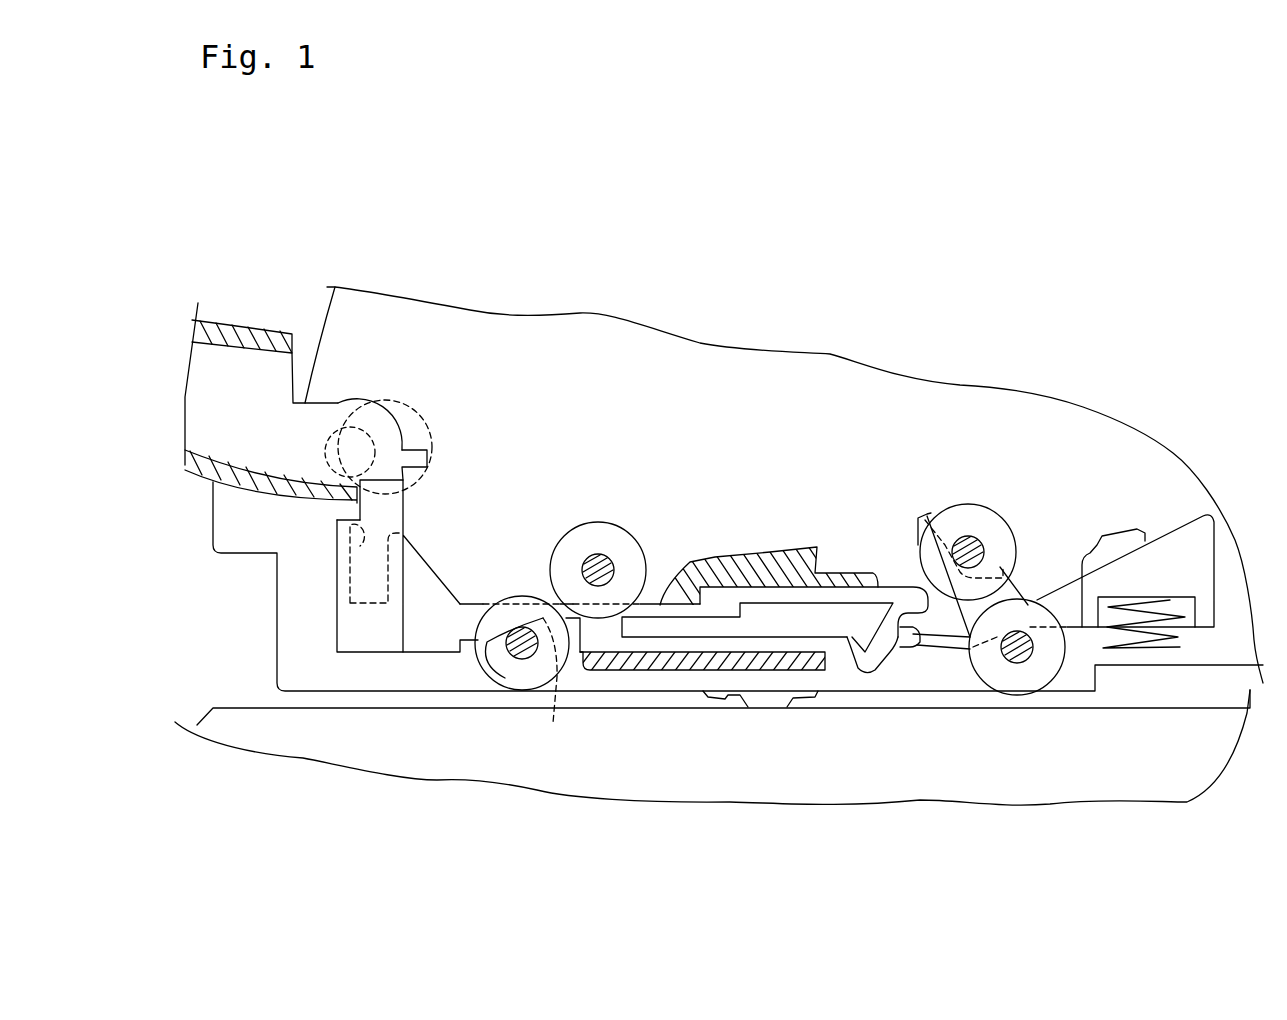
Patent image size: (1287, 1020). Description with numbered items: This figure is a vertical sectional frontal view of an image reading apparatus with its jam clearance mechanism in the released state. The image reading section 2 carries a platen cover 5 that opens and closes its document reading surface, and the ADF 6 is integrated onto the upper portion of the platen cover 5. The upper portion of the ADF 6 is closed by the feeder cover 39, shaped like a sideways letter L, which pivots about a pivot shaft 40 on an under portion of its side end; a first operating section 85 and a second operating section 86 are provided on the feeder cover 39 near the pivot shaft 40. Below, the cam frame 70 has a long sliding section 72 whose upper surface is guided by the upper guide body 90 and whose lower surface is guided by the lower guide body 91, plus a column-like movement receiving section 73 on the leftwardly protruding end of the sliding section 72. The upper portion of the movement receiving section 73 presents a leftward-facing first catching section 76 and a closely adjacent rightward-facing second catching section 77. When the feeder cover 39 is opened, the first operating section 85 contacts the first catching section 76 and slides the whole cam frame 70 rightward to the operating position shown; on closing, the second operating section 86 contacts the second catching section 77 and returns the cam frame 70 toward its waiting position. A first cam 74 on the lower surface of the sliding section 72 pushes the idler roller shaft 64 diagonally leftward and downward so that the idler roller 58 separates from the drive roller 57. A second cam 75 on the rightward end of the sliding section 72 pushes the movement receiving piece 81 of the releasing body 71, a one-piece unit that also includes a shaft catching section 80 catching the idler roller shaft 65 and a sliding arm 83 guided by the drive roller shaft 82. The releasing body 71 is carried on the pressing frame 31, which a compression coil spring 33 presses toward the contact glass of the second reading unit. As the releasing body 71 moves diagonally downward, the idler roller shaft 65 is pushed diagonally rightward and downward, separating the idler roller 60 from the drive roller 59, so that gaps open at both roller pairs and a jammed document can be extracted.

The ADF 6 is at (327, 330).
The feeder cover 39 is at (197, 475).
The pivot shaft 40 is at (346, 396).
The second operating section 86 is at (414, 446).
The first operating section 85 is at (370, 473).
The movement receiving section 73 is at (398, 505).
The first catching section 76 is at (355, 508).
The second catching section 77 is at (352, 558).
The platen cover 5 is at (277, 640).
The image reading section 2 is at (201, 722).
The idler roller shaft 64 is at (482, 677).
The idler roller 58 is at (510, 680).
The first cam 74 is at (549, 684).
The lower guide body 91 is at (640, 663).
The sliding section 72 is at (675, 643).
The drive roller 57 is at (598, 530).
The cam frame 70 is at (727, 587).
The upper guide body 90 is at (787, 558).
The second cam 75 is at (892, 662).
The movement receiving piece 81 is at (927, 652).
The sliding arm 83 is at (925, 513).
The drive roller 59 is at (986, 510).
The drive roller shaft 82 is at (968, 540).
The shaft catching section 80 is at (1012, 663).
The releasing body 71 is at (1016, 584).
The idler roller 60 is at (1053, 663).
The idler roller shaft 65 is at (1040, 658).
The pressing frame 31 is at (1185, 523).
The compression coil spring 33 is at (1182, 637).